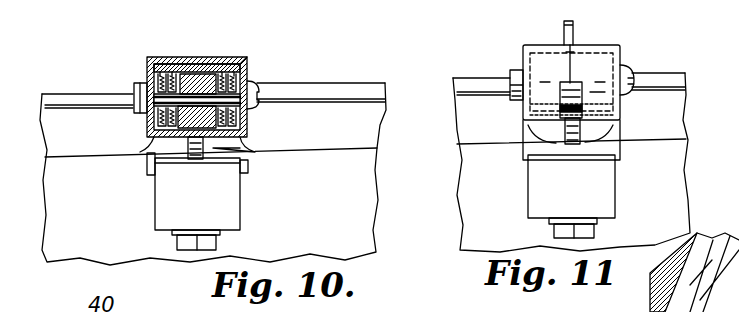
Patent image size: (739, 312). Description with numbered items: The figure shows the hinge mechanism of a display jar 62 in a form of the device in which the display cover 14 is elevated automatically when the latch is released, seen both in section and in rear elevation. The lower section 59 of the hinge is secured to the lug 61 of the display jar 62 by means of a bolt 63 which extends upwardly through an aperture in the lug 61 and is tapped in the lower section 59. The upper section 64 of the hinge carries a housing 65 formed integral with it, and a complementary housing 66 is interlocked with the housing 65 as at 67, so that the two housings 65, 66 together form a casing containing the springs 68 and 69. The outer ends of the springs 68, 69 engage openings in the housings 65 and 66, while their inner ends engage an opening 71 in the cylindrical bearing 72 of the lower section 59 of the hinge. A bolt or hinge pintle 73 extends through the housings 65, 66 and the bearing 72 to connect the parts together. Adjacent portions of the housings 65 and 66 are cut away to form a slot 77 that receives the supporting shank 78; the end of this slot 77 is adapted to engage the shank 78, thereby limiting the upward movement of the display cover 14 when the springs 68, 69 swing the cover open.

In FIG. 10, the display cover 14 is at (380, 84).
In FIG. 11, the display cover 14 is at (688, 72).
In FIG. 10, the lower section of the hinge 59 is at (232, 148).
In FIG. 10, the lug 61 is at (153, 200).
In FIG. 11, the lug 61 is at (615, 190).
In FIG. 10, the display jar 62 is at (68, 247).
In FIG. 11, the display jar 62 is at (692, 180).
In FIG. 10, the bolt 63 is at (197, 250).
In FIG. 11, the bolt 63 is at (598, 233).
In FIG. 11, the upper section of the hinge 64 is at (563, 42).
In FIG. 10, the housing 65 is at (247, 61).
In FIG. 11, the housing 65 is at (624, 46).
In FIG. 10, the complementary housing 66 is at (147, 61).
In FIG. 11, the complementary housing 66 is at (524, 49).
In FIG. 10, the interlock 67 is at (202, 72).
In FIG. 11, the interlock 67 is at (573, 47).
In FIG. 10, the spring 68 is at (227, 67).
In FIG. 10, the spring 69 is at (163, 73).
In FIG. 10, the opening 71 is at (188, 62).
In FIG. 10, the cylindrical bearing 72 is at (150, 137).
In FIG. 10, the hinge pintle 73 is at (260, 82).
In FIG. 11, the slot 77 is at (582, 82).
In FIG. 10, the supporting shank 78 is at (197, 158).
In FIG. 11, the supporting shank 78 is at (583, 129).